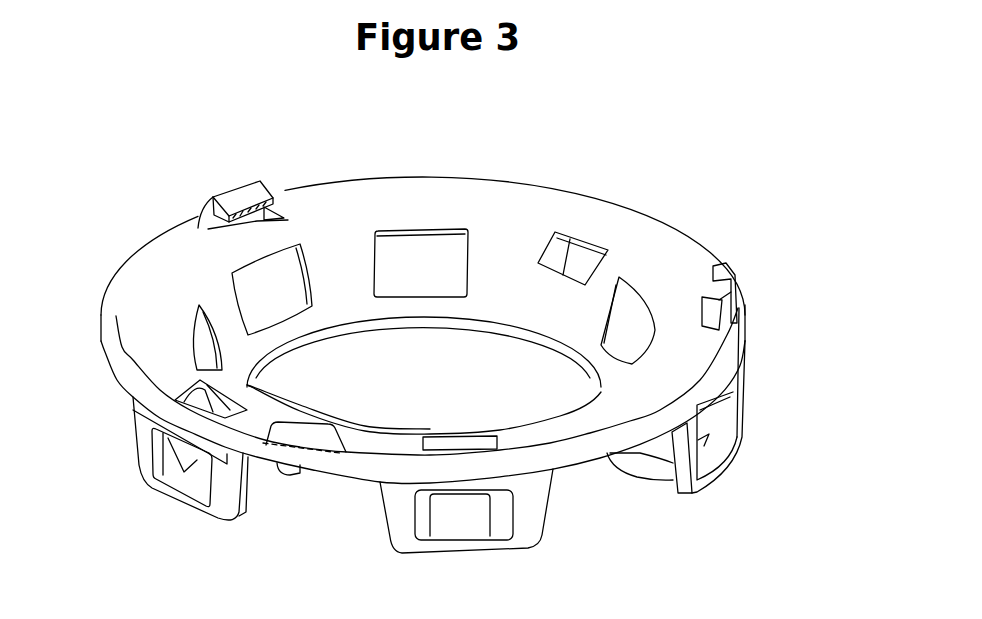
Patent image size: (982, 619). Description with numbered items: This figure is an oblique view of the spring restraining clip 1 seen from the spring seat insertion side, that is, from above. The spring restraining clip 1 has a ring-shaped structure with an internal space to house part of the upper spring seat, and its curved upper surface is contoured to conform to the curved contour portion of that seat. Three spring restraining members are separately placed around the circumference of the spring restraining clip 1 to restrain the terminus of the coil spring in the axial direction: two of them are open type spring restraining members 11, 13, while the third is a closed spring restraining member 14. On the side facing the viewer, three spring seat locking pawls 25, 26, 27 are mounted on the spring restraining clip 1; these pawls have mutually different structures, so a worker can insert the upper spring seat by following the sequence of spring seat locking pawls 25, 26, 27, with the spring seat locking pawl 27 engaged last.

The spring restraining clip 1 is at (500, 140).
The open type spring restraining member 11 is at (160, 507).
The open type spring restraining member 13 is at (556, 528).
The closed spring restraining member 14 is at (738, 477).
The spring seat locking pawl 25 is at (241, 190).
The spring seat locking pawl 26 is at (316, 440).
The spring seat locking pawl 27 is at (714, 265).